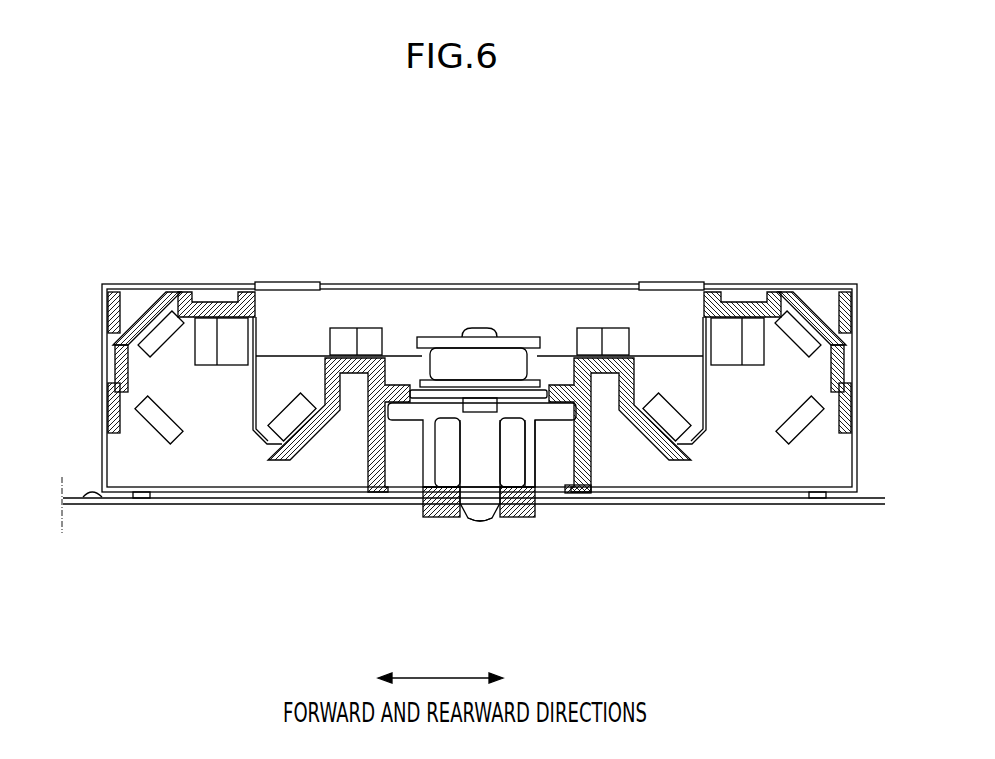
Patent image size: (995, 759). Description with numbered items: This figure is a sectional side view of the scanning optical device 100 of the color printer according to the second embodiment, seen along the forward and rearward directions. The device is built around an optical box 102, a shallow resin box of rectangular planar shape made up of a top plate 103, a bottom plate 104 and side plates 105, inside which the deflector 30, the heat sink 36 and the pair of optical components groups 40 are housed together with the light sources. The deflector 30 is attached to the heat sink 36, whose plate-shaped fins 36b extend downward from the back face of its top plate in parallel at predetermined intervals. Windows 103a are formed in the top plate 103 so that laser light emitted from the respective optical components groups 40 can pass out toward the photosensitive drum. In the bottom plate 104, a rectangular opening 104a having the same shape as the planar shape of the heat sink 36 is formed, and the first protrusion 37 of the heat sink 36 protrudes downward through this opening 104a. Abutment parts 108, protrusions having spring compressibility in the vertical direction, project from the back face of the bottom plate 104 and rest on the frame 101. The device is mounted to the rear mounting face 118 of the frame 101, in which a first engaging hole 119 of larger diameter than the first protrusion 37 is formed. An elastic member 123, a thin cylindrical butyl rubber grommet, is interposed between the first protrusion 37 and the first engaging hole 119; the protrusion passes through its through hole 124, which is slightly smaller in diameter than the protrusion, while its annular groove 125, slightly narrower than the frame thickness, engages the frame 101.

The scanning optical device 100 is at (233, 187).
The frame 101 is at (73, 507).
The optical box 102 is at (102, 398).
The top plate 103 is at (357, 283).
The window 103a is at (283, 282).
The bottom plate 104 is at (282, 489).
The opening 104a is at (567, 502).
The side plate 105 is at (857, 377).
The abutment part 108 is at (140, 498).
The rear mounting face 118 is at (100, 504).
The first engaging hole 119 is at (507, 518).
The elastic member 123 is at (428, 518).
The through hole 124 is at (483, 514).
The annular groove 125 is at (437, 518).
The deflector 30 is at (433, 334).
The heat sink 36 is at (420, 463).
The fin 36b is at (532, 460).
The first protrusion 37 is at (473, 478).
The optical components group 40 is at (182, 354).